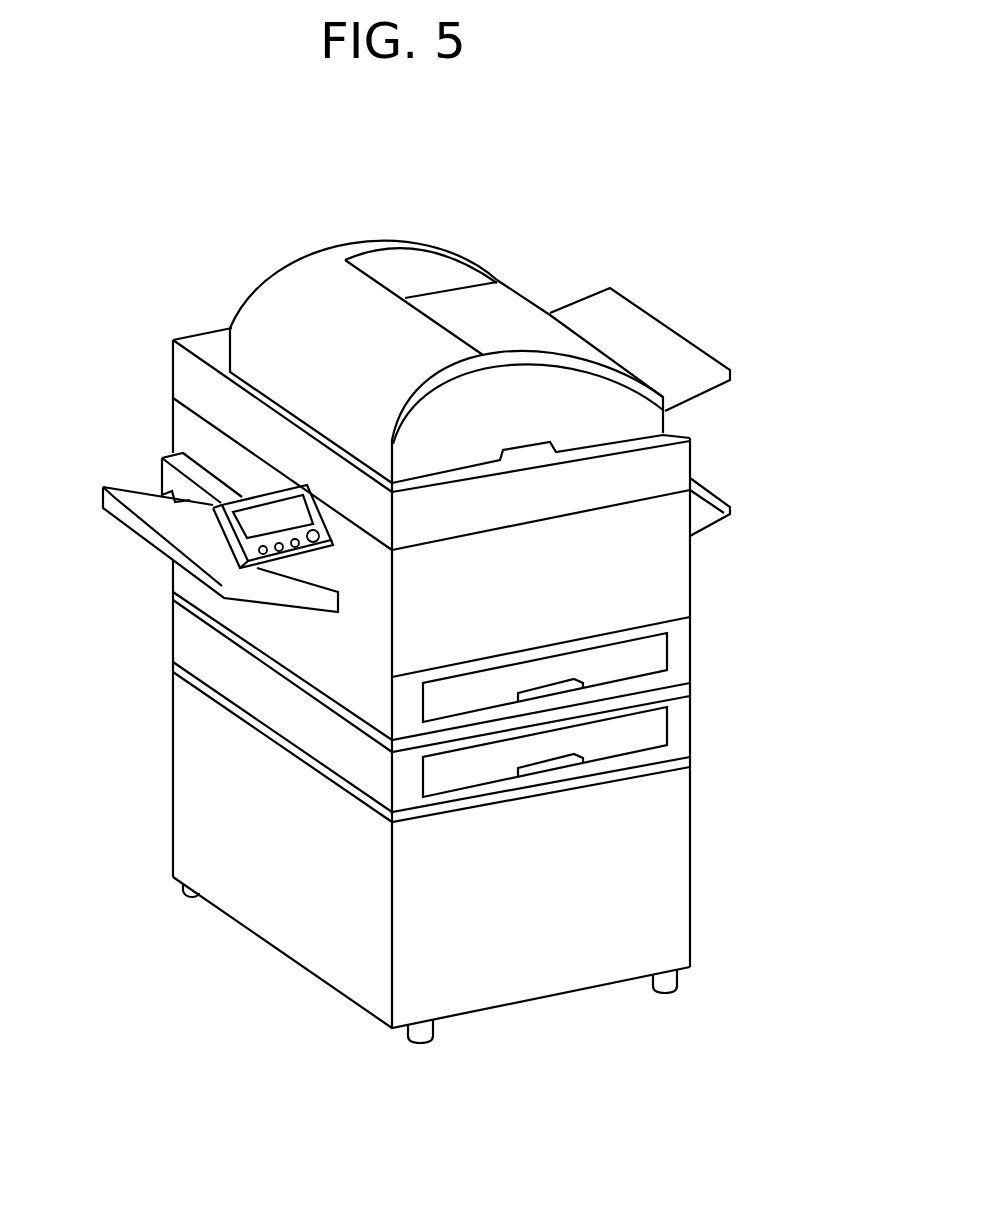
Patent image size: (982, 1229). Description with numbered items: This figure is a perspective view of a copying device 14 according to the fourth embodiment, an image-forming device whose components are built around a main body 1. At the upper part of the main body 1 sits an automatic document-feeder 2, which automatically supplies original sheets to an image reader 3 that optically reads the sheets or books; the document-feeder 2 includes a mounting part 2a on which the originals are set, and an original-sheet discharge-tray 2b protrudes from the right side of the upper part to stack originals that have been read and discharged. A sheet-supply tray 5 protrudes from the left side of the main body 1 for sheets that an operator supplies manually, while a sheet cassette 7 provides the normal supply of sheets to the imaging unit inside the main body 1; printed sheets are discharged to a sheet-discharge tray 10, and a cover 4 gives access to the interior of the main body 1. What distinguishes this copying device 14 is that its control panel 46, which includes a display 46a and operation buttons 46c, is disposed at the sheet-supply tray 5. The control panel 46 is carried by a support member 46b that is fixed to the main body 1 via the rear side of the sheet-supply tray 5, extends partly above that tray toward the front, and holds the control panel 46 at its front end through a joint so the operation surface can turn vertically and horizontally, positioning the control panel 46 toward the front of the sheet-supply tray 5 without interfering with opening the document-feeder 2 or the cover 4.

The main body 1 is at (207, 328).
The automatic document-feeder 2 is at (337, 282).
The mounting part 2a is at (517, 315).
The original-sheet discharge-tray 2b is at (642, 317).
The image reader 3 is at (683, 458).
The cover 4 is at (683, 567).
The sheet-supply tray 5 is at (158, 532).
The sheet cassette 7 is at (657, 653).
The sheet-discharge tray 10 is at (705, 500).
The copying device 14 is at (480, 301).
The control panel 46 is at (205, 576).
The display 46a is at (245, 527).
The support member 46b is at (168, 473).
The operation buttons 46c is at (296, 548).